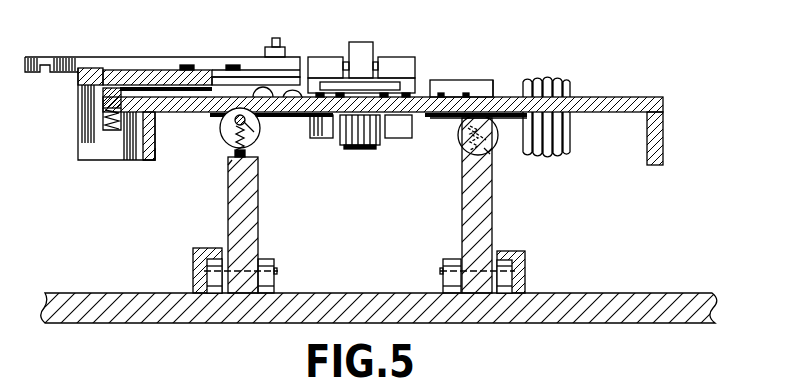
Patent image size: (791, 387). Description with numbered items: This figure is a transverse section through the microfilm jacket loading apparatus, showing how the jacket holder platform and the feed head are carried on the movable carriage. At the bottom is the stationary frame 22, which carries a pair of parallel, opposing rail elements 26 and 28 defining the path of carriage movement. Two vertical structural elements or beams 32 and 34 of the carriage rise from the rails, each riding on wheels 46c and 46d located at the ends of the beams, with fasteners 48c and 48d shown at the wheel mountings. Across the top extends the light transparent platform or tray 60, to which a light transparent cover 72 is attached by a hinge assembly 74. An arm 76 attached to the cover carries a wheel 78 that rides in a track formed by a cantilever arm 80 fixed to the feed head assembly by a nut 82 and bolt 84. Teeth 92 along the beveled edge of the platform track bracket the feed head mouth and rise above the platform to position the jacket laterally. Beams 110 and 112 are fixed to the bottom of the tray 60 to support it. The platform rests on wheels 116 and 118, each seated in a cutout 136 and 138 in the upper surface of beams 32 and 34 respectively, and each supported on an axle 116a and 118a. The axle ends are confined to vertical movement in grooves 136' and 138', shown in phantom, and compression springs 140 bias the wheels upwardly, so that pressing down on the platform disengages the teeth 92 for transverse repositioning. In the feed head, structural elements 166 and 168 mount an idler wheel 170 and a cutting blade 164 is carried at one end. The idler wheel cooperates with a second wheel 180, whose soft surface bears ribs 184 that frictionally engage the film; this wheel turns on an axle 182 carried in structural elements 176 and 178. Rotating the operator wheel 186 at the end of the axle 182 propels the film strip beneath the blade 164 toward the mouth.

The stationary frame 22 is at (140, 293).
The rail element 26 is at (195, 250).
The rail element 28 is at (525, 262).
The vertical structural element 32 is at (253, 195).
The vertical structural element 34 is at (493, 220).
The wheels 46c is at (213, 296).
The wheels 46d is at (503, 296).
The fastening bolt 48c is at (262, 272).
The fastening bolt 48d is at (452, 272).
The platform 60 is at (600, 97).
The cover 72 is at (200, 80).
The hinge assembly 74 is at (95, 145).
The arm 76 is at (92, 68).
The wheel 78 is at (85, 92).
The cantilever arm 80 is at (172, 57).
The nut 82 is at (287, 50).
The bolt 84 is at (281, 46).
The teeth 92 is at (432, 86).
The beam 110 is at (155, 158).
The beam 112 is at (663, 140).
The wheel 116 is at (222, 126).
The axle 116a is at (258, 136).
The wheel 118 is at (478, 100).
The axle 118a is at (465, 128).
The cutout 136 is at (270, 162).
The groove 136' is at (206, 177).
The cutout 138 is at (453, 145).
The groove 138' is at (514, 170).
The compression springs 140 is at (228, 148).
The cutting blade 164 is at (396, 57).
The structural element 166 is at (313, 60).
The structural element 168 is at (400, 60).
The idler wheel 170 is at (362, 45).
The structural element 176 is at (322, 140).
The structural element 178 is at (398, 140).
The second wheel 180 is at (350, 150).
The axle 182 is at (515, 116).
The ribs 184 is at (365, 145).
The operator wheel 186 is at (570, 135).